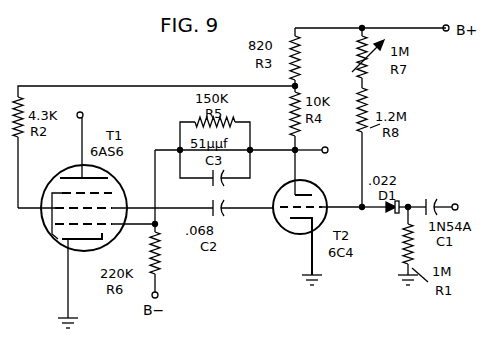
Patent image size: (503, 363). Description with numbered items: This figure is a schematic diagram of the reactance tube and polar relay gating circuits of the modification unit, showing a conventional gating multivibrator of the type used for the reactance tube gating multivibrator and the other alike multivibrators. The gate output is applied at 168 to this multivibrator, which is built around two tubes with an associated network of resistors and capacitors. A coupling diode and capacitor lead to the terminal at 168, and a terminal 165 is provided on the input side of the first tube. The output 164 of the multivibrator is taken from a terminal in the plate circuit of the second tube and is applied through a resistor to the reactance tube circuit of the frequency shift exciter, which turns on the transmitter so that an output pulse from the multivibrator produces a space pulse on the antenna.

The output 164 is at (326, 153).
The input terminal 165 is at (83, 112).
The input 168 is at (457, 204).